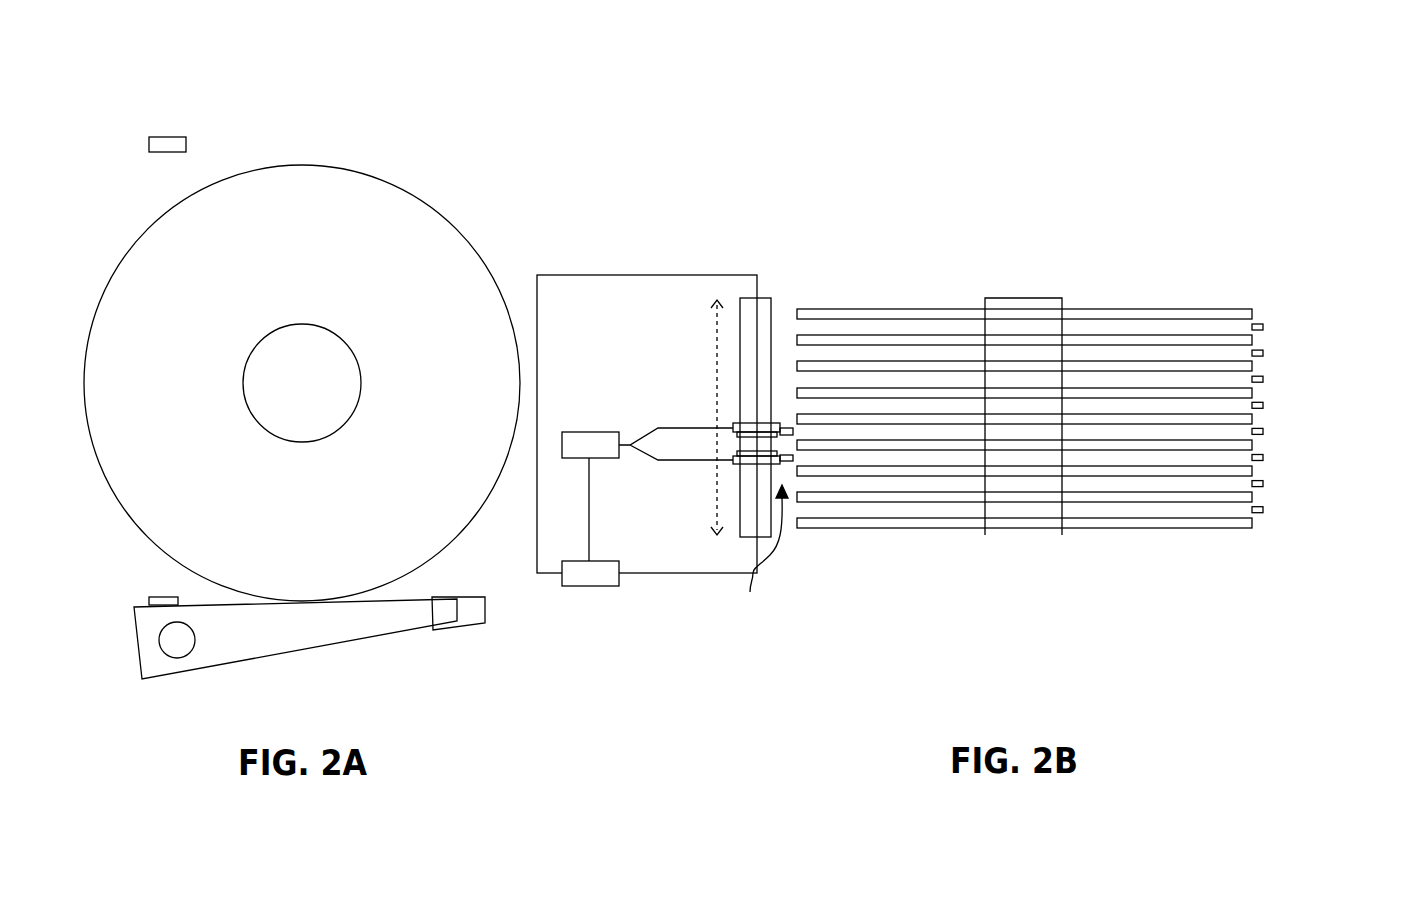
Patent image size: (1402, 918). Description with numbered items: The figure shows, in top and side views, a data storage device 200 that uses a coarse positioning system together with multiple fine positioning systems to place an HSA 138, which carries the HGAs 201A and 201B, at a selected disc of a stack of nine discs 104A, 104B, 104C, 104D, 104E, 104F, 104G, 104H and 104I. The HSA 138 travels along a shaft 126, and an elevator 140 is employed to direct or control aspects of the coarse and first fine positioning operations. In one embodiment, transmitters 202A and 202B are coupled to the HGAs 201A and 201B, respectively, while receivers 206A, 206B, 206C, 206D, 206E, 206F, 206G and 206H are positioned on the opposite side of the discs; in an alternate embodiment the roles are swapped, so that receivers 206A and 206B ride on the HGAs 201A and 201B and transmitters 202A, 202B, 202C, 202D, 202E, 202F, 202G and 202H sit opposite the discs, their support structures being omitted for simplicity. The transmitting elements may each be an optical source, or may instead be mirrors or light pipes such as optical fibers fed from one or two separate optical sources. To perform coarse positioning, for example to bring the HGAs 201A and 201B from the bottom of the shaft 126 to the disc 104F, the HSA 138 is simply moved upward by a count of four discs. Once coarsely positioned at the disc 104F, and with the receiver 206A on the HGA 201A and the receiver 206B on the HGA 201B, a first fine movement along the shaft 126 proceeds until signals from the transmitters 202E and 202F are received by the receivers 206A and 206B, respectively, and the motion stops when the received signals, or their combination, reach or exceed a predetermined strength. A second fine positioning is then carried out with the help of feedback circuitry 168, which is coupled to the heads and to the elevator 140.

In FIG. 2A, the data storage device 200 is at (532, 142).
In FIG. 2B, the data storage device 200 is at (1322, 205).
In FIG. 2B, the disc 104A is at (1095, 312).
In FIG. 2B, the disc 104B is at (1120, 337).
In FIG. 2B, the disc 104C is at (1172, 363).
In FIG. 2B, the disc 104D is at (1210, 390).
In FIG. 2B, the disc 104E is at (1213, 417).
In FIG. 2B, the disc 104F is at (1175, 443).
In FIG. 2B, the disc 104G is at (1137, 470).
In FIG. 2B, the disc 104H is at (1095, 497).
In FIG. 2B, the disc 104I is at (1072, 523).
In FIG. 2B, the shaft 126 is at (750, 305).
In FIG. 2B, the HSA 138 is at (761, 552).
In FIG. 2B, the elevator 140 is at (605, 586).
In FIG. 2B, the feedback circuitry 168 is at (582, 442).
In FIG. 2A, the HGA 201A is at (397, 623).
In FIG. 2B, the HGA 201A is at (750, 425).
In FIG. 2B, the HGA 201B is at (750, 463).
In FIG. 2A, the transmitter 202A is at (135, 337).
In FIG. 2B, the transmitter 202A is at (1084, 343).
In FIG. 2B, the transmitter 202B is at (1083, 460).
In FIG. 2B, the transmitter 202C is at (1320, 370).
In FIG. 2B, the transmitter 202D is at (1321, 395).
In FIG. 2B, the transmitter 202E is at (1319, 421).
In FIG. 2B, the transmitter 202F is at (1317, 448).
In FIG. 2B, the transmitter 202G is at (1321, 474).
In FIG. 2B, the transmitter 202H is at (1321, 500).
In FIG. 2A, the receiver 206A is at (165, 137).
In FIG. 2B, the receiver 206A is at (794, 430).
In FIG. 2B, the receiver 206B is at (794, 459).
In FIG. 2B, the receiver 206C is at (1264, 379).
In FIG. 2B, the receiver 206D is at (1264, 405).
In FIG. 2B, the receiver 206E is at (1264, 431).
In FIG. 2B, the receiver 206F is at (1264, 458).
In FIG. 2B, the receiver 206G is at (1264, 484).
In FIG. 2B, the receiver 206H is at (1264, 510).